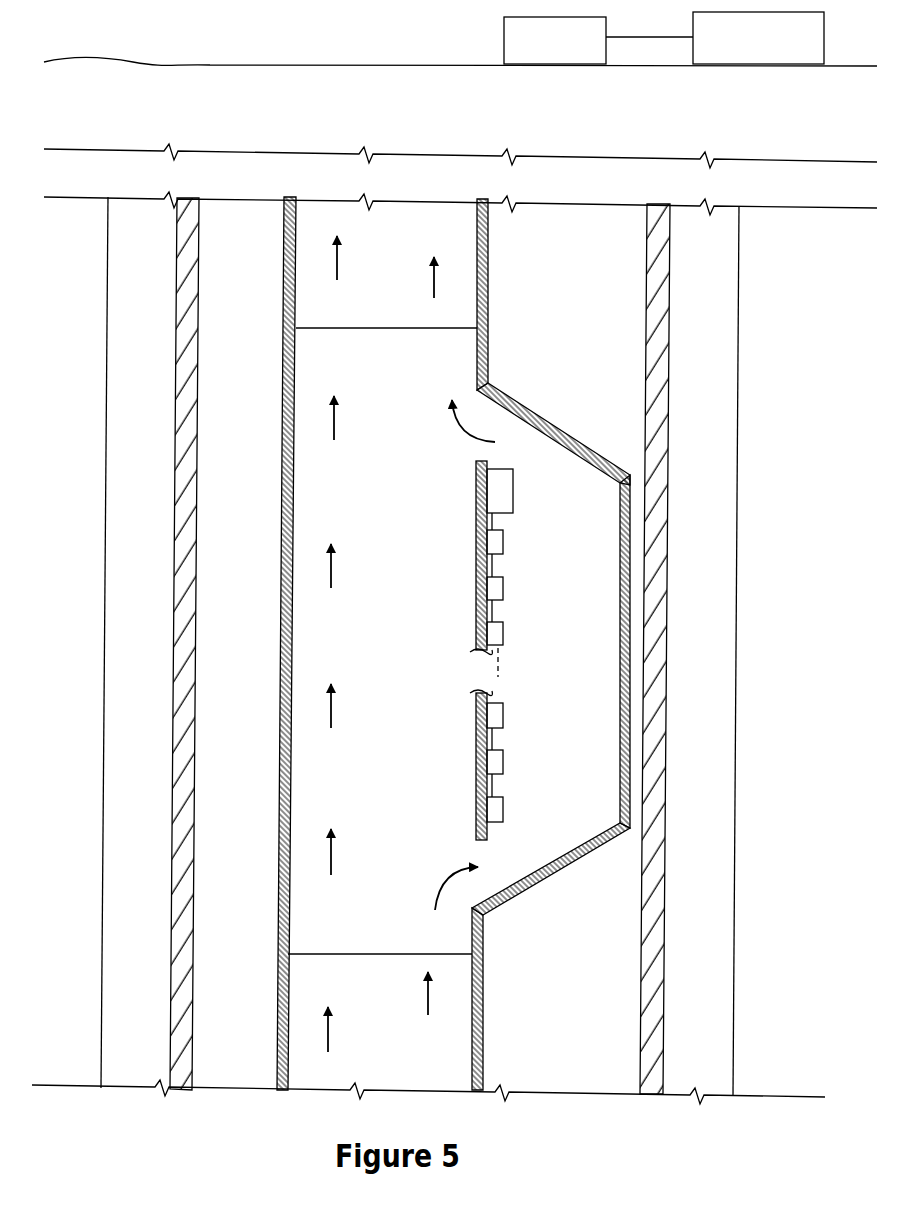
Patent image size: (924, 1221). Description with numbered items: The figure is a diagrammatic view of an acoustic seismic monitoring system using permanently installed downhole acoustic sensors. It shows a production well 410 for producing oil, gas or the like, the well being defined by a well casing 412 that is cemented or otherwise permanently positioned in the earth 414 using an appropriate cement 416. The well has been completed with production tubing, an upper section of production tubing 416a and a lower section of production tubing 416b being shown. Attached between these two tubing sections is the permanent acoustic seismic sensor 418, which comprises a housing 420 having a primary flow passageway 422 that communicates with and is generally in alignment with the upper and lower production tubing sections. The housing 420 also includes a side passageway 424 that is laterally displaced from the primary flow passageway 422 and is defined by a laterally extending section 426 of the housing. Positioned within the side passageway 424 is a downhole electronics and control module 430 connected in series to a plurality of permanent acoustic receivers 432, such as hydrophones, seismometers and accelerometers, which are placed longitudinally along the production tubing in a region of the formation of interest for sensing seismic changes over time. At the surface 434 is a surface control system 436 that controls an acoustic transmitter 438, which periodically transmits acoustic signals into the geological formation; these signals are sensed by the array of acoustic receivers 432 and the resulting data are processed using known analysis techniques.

The production well 410 is at (593, 971).
The well casing 412 is at (648, 901).
The earth 414 is at (792, 650).
The cement 416 is at (722, 650).
The upper section of production tubing 416a is at (488, 270).
The lower section of production tubing 416b is at (483, 1030).
The permanent acoustic seismic sensor 418 is at (281, 551).
The housing 420 is at (281, 690).
The primary flow passageway 422 is at (309, 768).
The side passageway 424 is at (551, 644).
The laterally extending section 426 is at (538, 413).
The downhole electronics and control module 430 is at (513, 492).
The permanent acoustic receivers 432 is at (503, 541).
The surface 434 is at (345, 116).
The surface control system 436 is at (578, 53).
The acoustic transmitter 438 is at (782, 50).